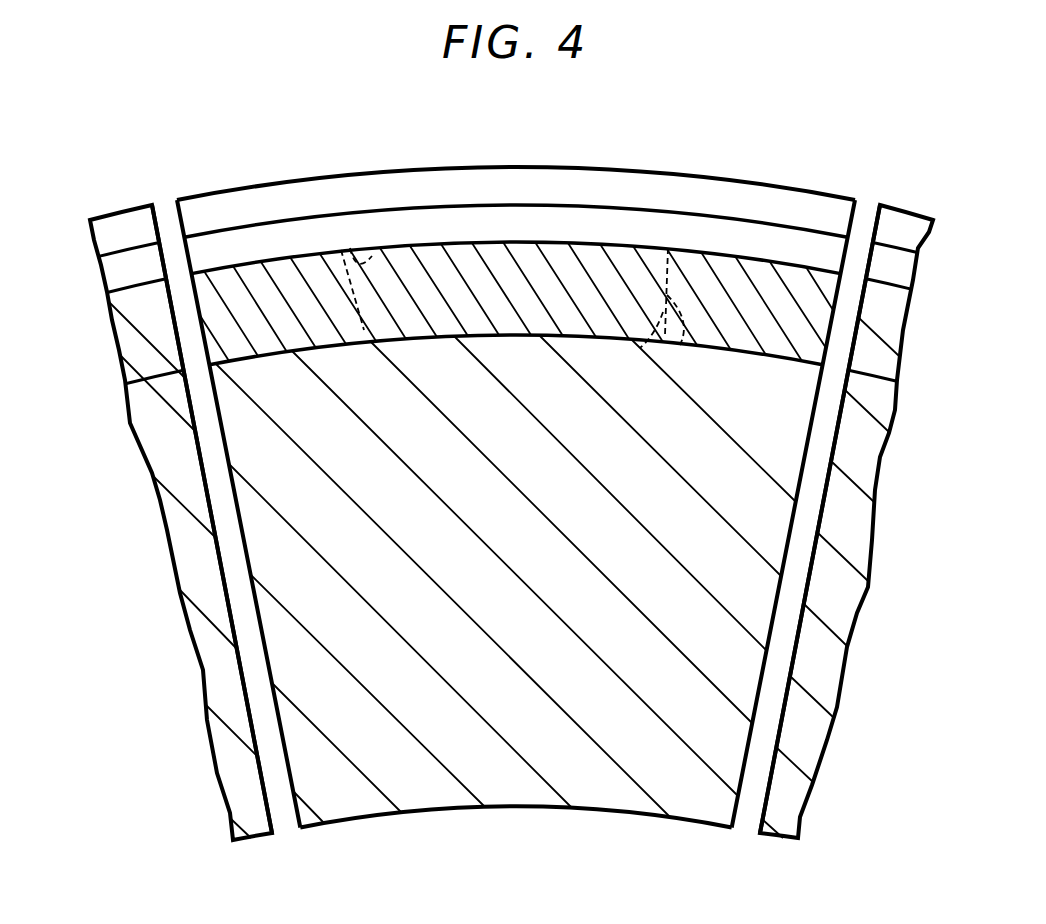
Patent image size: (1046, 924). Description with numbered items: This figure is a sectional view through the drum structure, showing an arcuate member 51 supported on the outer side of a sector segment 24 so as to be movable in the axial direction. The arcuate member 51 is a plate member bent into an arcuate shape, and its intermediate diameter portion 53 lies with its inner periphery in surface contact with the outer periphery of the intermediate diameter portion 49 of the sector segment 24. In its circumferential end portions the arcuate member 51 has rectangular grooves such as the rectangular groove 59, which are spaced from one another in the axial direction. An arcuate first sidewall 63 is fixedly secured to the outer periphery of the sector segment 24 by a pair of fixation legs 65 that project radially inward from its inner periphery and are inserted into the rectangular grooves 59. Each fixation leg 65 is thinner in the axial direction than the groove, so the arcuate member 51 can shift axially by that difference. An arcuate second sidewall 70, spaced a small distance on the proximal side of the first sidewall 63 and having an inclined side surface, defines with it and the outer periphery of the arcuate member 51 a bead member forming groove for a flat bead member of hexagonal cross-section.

The sector segment 24 is at (253, 843).
The intermediate diameter portion 49 is at (547, 785).
The arcuate member 51 is at (127, 272).
The intermediate diameter portion 53 is at (605, 257).
The rectangular groove 59 is at (345, 254).
The first sidewall 63 is at (557, 193).
The fixation leg 65 is at (362, 250).
The second sidewall 70 is at (467, 216).